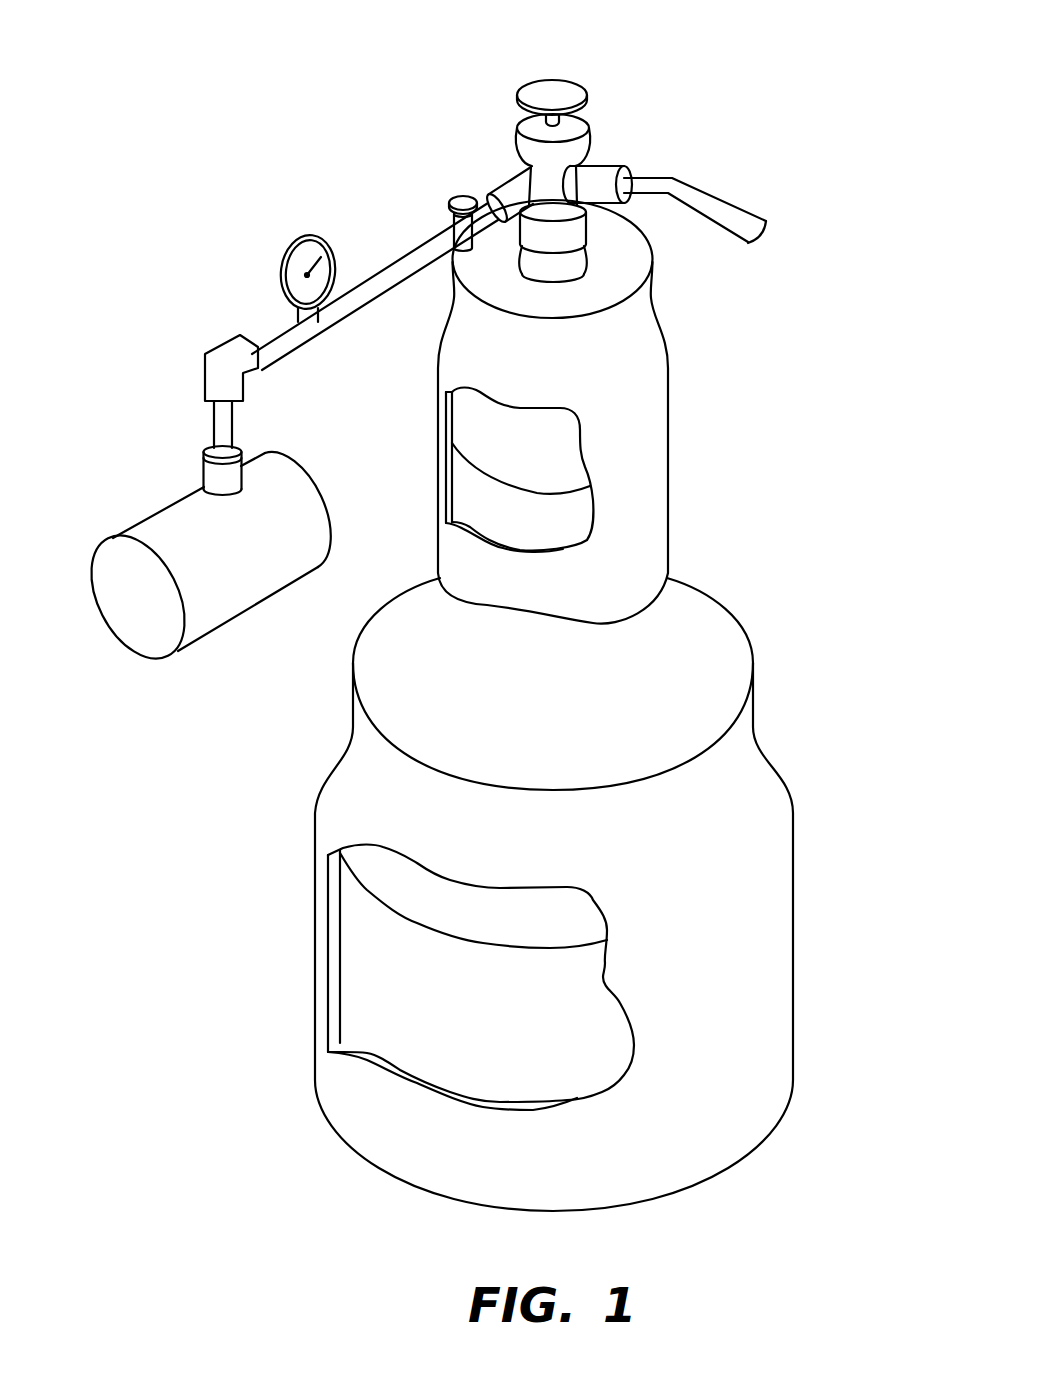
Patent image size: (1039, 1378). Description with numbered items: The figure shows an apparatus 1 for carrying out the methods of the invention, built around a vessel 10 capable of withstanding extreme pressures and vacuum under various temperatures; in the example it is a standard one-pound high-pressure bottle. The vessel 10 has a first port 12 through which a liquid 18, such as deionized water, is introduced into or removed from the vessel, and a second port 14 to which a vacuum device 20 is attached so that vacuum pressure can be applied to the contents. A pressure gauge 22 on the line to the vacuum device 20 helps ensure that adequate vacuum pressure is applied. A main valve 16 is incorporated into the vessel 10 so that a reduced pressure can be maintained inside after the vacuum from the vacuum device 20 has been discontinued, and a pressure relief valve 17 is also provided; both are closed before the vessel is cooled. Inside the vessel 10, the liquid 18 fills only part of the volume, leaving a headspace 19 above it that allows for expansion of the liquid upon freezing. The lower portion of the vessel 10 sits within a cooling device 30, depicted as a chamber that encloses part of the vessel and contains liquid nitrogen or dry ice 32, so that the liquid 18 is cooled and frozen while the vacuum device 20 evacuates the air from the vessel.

The apparatus 1 is at (730, 87).
The vessel 10 is at (599, 412).
The first port 12 is at (725, 213).
The second port 14 is at (405, 258).
The main valve 16 is at (552, 97).
The pressure relief valve 17 is at (462, 196).
The liquid 18 is at (532, 530).
The headspace 19 is at (532, 456).
The vacuum device 20 is at (197, 508).
The pressure gauge 22 is at (291, 280).
The cooling device 30 is at (597, 894).
The liquid nitrogen or dry ice 32 is at (471, 1020).